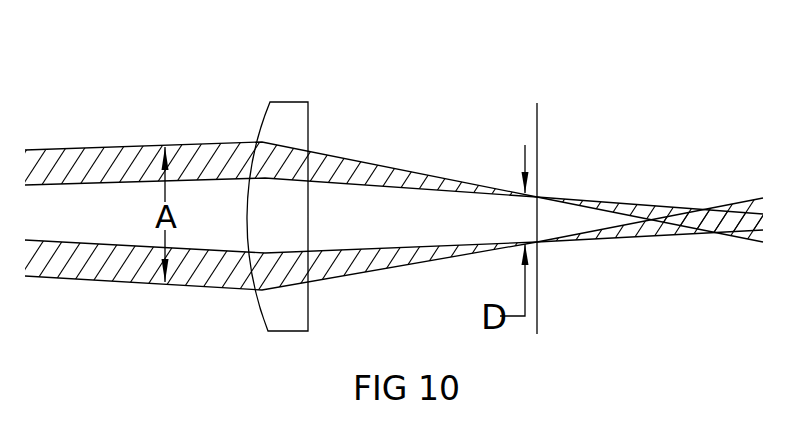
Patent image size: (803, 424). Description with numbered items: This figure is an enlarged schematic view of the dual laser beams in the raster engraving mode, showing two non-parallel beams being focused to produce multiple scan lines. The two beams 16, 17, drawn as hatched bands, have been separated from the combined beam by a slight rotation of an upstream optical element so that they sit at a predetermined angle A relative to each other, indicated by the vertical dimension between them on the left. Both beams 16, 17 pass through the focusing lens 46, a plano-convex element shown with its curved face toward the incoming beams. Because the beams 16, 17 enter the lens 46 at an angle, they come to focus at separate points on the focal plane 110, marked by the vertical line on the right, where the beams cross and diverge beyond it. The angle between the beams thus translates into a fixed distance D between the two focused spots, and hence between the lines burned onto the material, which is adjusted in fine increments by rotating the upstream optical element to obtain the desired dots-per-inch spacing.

The laser beam 16 is at (55, 149).
The laser beam 17 is at (67, 265).
The focusing lens 46 is at (282, 109).
The focal plane 110 is at (536, 199).